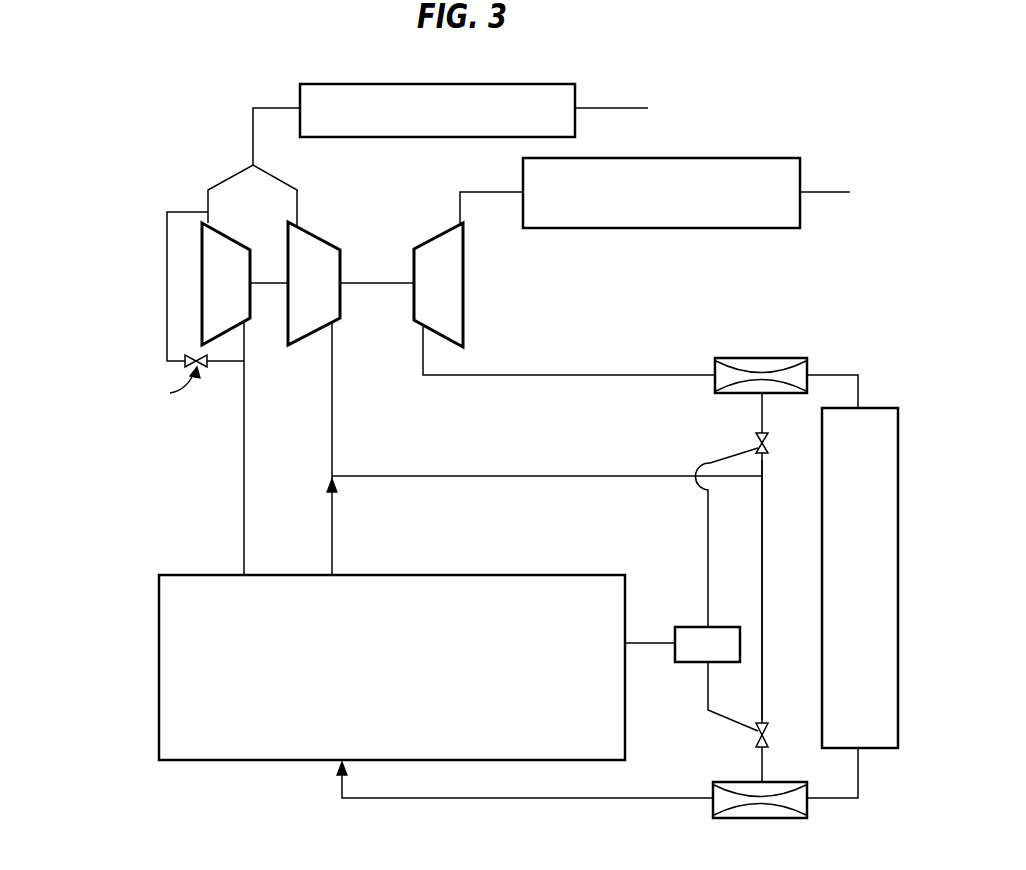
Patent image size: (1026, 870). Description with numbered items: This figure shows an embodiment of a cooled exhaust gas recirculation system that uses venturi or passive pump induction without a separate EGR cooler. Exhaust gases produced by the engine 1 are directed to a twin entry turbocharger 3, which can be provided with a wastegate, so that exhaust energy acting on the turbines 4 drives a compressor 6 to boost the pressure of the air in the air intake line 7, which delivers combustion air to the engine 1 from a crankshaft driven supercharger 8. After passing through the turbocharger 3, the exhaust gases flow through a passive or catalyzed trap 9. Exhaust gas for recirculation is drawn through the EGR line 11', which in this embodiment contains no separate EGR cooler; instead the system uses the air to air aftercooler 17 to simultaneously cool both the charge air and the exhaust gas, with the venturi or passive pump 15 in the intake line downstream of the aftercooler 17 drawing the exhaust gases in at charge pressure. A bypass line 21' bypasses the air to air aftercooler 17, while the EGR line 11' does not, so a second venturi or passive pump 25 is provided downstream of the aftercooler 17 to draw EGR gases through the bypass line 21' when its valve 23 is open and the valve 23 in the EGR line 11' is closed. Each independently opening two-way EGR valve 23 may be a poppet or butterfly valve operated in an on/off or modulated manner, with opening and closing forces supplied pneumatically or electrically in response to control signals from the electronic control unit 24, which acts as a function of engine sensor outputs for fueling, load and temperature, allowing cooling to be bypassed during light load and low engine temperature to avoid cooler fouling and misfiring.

The engine 1 is at (462, 575).
The twin entry turbocharger 3 is at (272, 354).
The turbines 4 is at (286, 252).
The compressor 6 is at (498, 276).
The air intake line 7 is at (623, 797).
The crankshaft driven supercharger 8 is at (755, 158).
The passive trap 9 is at (532, 84).
The EGR line 11' is at (574, 497).
The venturi or passive pump 15 is at (736, 776).
The air to air aftercooler 17 is at (873, 408).
The bypass line 21' is at (790, 590).
The two-way EGR valve 23 is at (750, 430).
The electronic control unit 24 is at (692, 627).
The second venturi or passive pump 25 is at (736, 352).